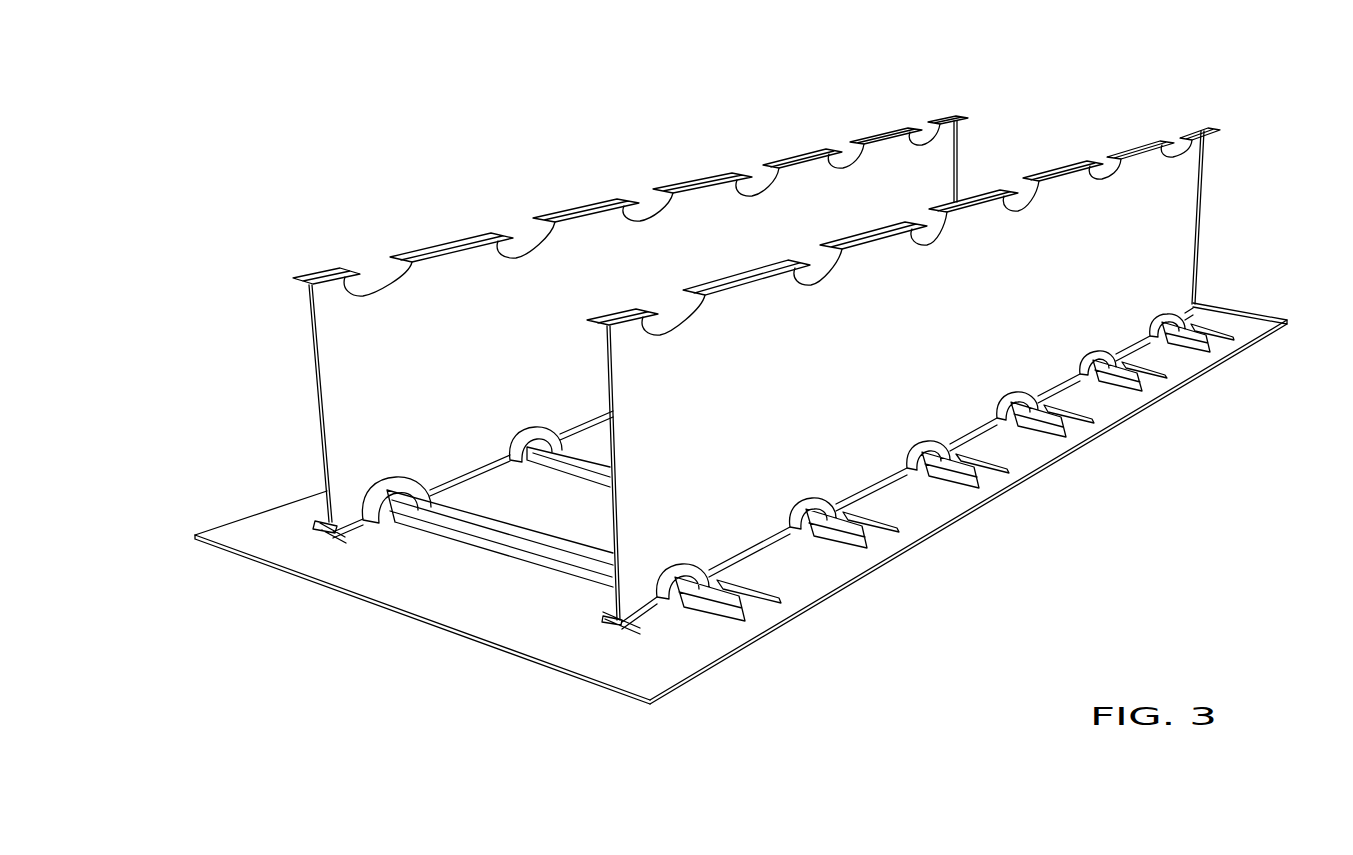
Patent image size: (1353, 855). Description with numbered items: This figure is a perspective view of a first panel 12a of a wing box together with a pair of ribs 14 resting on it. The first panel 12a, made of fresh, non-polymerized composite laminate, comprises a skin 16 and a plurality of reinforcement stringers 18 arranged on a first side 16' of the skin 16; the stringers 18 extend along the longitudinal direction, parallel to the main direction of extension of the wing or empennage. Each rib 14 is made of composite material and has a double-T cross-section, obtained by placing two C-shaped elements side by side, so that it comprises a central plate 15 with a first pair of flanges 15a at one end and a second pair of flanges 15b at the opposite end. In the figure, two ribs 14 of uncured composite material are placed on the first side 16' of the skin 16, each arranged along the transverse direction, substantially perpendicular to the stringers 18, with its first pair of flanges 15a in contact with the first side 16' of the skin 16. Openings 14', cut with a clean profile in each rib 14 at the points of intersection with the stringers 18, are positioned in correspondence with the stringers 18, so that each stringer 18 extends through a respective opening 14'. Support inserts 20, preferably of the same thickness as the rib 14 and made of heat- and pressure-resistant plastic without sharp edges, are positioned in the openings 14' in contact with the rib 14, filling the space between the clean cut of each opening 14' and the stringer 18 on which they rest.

The first panel 12a is at (235, 558).
The rib 14 is at (1042, 123).
The openings 14' is at (642, 166).
The central plate 15 is at (313, 400).
The first pair of flanges 15a is at (636, 622).
The second pair of flanges 15b is at (318, 270).
The skin 16 is at (1263, 249).
The first side of the skin 16' is at (422, 632).
The reinforcement stringers 18 is at (1165, 367).
The support inserts 20 is at (657, 590).